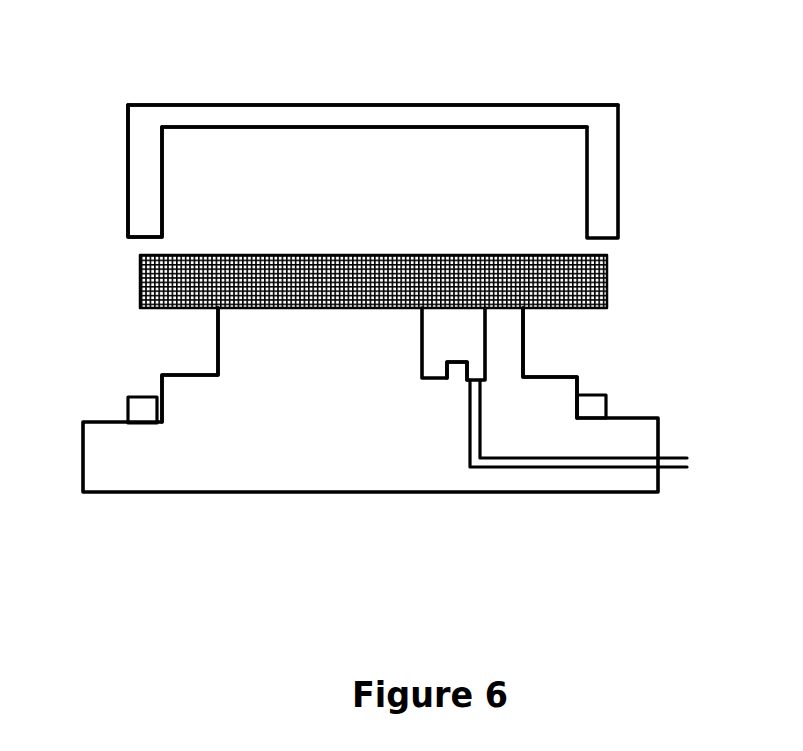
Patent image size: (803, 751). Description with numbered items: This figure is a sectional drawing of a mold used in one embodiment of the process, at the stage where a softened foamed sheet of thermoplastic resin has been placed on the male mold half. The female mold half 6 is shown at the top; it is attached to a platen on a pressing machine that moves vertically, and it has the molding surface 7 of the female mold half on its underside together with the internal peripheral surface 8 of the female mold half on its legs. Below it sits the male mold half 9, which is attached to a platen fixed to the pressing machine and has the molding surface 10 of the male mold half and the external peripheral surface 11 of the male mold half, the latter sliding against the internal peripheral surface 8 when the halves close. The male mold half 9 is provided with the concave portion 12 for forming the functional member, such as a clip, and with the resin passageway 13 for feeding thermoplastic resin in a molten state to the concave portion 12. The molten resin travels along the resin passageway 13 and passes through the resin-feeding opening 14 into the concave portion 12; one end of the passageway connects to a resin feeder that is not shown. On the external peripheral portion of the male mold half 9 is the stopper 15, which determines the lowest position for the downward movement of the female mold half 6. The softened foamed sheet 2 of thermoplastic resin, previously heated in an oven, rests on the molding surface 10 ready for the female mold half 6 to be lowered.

The softened foamed sheet 2 is at (162, 283).
The female mold half 6 is at (458, 115).
The molding surface of the female mold half 7 is at (313, 127).
The internal peripheral surface of the female mold half 8 is at (162, 181).
The male mold half 9 is at (208, 470).
The molding surface of the male mold half 10 is at (245, 308).
The external peripheral surface of the male mold half 11 is at (530, 340).
The concave portion 12 is at (422, 340).
The resin passageway 13 is at (470, 428).
The resin-feeding opening 14 is at (470, 385).
The stopper 15 is at (612, 402).